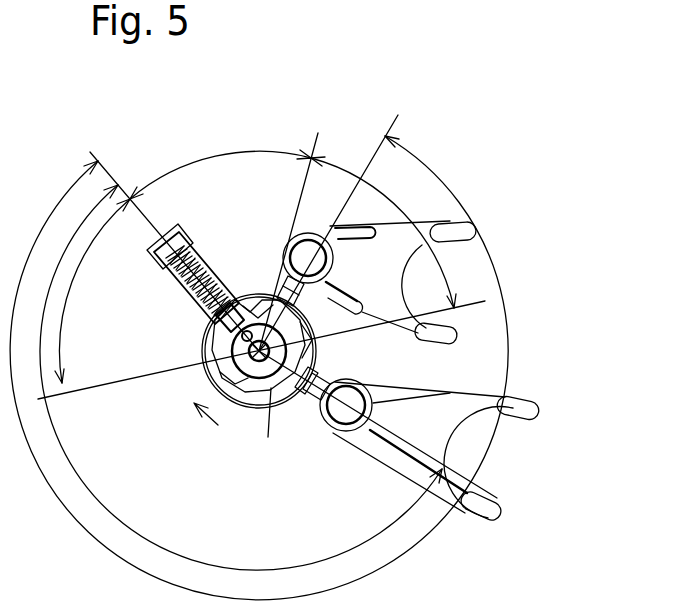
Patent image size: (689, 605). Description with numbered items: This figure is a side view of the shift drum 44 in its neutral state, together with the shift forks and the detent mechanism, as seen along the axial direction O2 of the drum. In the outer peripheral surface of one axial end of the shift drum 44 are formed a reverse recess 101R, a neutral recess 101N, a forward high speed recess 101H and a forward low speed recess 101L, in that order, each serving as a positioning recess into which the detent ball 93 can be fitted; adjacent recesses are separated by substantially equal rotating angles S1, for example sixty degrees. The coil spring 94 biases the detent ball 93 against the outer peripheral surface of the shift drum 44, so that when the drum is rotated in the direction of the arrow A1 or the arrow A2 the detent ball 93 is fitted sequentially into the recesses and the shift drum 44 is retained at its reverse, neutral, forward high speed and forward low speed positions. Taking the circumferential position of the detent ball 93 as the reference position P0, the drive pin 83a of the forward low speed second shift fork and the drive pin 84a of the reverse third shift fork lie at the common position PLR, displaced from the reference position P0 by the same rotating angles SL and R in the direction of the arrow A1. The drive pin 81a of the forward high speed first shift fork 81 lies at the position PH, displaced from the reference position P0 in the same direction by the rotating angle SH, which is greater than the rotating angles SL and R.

The shift drum 44 is at (205, 372).
The first shift fork 81 is at (394, 278).
The drive pin 81a is at (318, 318).
The drive pin 83a is at (413, 445).
The drive pin 84a is at (415, 410).
The detent ball 93 is at (212, 326).
The coil spring 94 is at (178, 275).
The forward high speed recess 101H is at (256, 318).
The neutral recess 101N is at (214, 351).
The reverse recess 101R is at (205, 381).
The forward low speed recess 101L is at (330, 352).
The axial direction O2 is at (198, 392).
The arrow A1 is at (254, 431).
The arrow A2 is at (205, 428).
The rotating angle S1 is at (255, 266).
The rotating angle SH is at (259, 370).
The rotating angle SL is at (241, 377).
The reference position P0 is at (74, 137).
The position PH is at (405, 103).
The position PLR is at (530, 488).